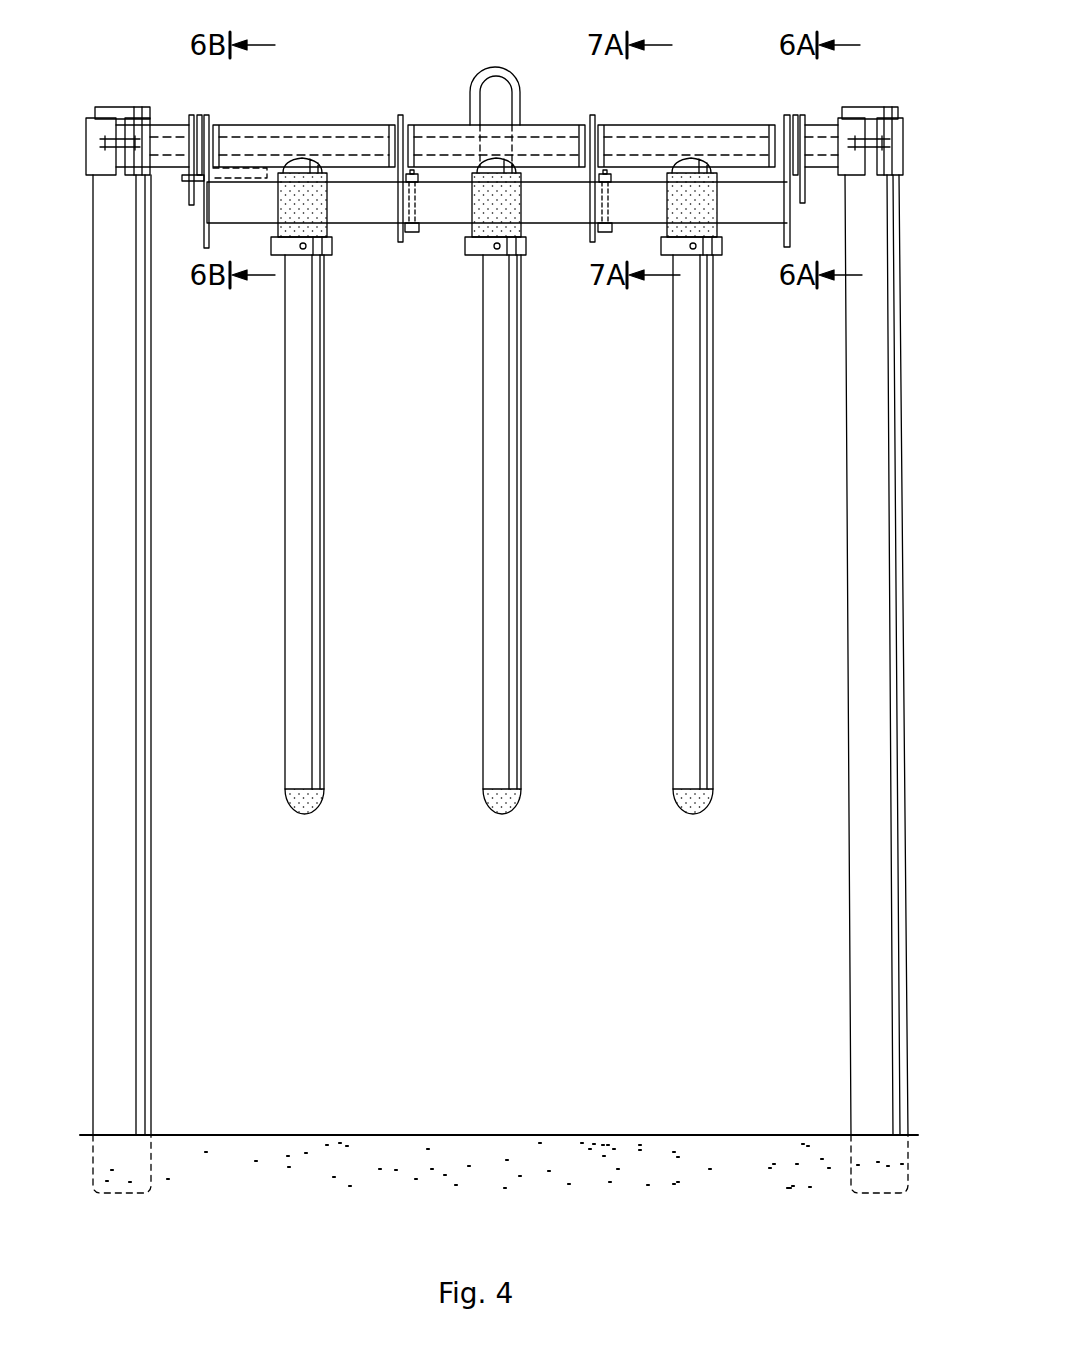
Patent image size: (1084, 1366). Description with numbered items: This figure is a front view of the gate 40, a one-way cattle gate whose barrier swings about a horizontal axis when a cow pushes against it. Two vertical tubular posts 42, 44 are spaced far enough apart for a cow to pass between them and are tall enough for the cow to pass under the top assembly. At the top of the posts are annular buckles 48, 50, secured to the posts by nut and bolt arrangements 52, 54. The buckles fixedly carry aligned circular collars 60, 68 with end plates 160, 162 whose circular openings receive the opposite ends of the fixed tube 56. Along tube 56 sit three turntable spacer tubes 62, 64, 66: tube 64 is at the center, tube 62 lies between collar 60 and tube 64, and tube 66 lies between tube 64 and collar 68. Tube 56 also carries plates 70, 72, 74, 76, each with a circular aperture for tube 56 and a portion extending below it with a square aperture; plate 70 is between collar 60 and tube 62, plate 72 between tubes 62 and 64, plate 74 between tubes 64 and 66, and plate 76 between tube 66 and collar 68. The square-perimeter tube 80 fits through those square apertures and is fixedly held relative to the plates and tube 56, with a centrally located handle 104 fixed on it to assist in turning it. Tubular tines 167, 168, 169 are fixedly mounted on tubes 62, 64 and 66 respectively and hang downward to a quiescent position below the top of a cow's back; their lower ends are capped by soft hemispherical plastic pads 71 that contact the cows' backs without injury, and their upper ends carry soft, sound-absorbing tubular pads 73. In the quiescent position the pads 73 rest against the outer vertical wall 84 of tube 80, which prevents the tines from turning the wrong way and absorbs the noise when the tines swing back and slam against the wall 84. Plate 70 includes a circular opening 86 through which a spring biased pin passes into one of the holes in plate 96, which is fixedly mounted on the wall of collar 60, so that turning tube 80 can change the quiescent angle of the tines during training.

The gate 40 is at (78, 424).
The vertical tubular post 42 is at (112, 280).
The vertical tubular post 44 is at (888, 395).
The annular buckle 48 is at (96, 128).
The nut and bolt arrangement 52 is at (138, 130).
The nut and bolt arrangement 54 is at (886, 120).
The annular buckle 50 is at (902, 132).
The circular collar 60 is at (175, 162).
The plate 96 is at (192, 206).
The end plate 160 is at (200, 114).
The plate 70 is at (207, 116).
The turntable spacer tube 62 is at (297, 125).
The plate 72 is at (402, 115).
The turntable spacer tube 64 is at (531, 125).
The handle 104 is at (494, 70).
The plate 74 is at (593, 115).
The turntable spacer tube 66 is at (645, 125).
The tube 56 is at (748, 143).
The end plate 162 is at (795, 112).
The circular collar 68 is at (822, 158).
The plate 76 is at (790, 237).
The outer vertical wall 84 is at (558, 215).
The tube 80 is at (752, 215).
The circular opening 86 is at (416, 233).
The tubular plastic pad 73 is at (322, 212).
The tubular tine 167 is at (308, 541).
The tubular tine 168 is at (498, 546).
The tubular tine 169 is at (685, 558).
The hemispherical plastic pad 71 is at (300, 802).